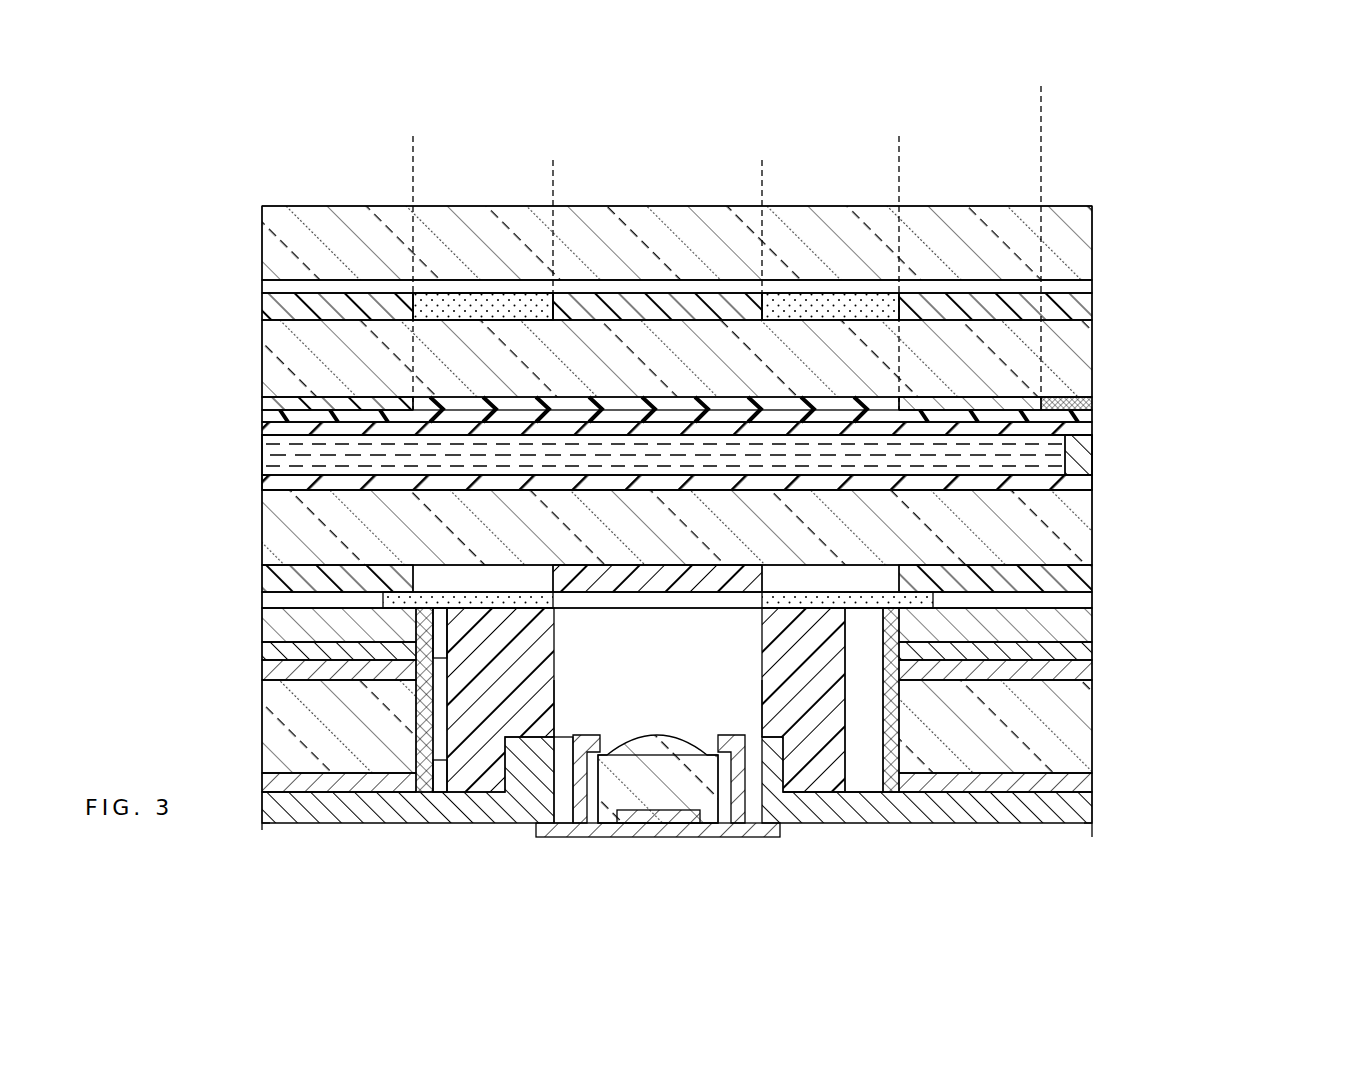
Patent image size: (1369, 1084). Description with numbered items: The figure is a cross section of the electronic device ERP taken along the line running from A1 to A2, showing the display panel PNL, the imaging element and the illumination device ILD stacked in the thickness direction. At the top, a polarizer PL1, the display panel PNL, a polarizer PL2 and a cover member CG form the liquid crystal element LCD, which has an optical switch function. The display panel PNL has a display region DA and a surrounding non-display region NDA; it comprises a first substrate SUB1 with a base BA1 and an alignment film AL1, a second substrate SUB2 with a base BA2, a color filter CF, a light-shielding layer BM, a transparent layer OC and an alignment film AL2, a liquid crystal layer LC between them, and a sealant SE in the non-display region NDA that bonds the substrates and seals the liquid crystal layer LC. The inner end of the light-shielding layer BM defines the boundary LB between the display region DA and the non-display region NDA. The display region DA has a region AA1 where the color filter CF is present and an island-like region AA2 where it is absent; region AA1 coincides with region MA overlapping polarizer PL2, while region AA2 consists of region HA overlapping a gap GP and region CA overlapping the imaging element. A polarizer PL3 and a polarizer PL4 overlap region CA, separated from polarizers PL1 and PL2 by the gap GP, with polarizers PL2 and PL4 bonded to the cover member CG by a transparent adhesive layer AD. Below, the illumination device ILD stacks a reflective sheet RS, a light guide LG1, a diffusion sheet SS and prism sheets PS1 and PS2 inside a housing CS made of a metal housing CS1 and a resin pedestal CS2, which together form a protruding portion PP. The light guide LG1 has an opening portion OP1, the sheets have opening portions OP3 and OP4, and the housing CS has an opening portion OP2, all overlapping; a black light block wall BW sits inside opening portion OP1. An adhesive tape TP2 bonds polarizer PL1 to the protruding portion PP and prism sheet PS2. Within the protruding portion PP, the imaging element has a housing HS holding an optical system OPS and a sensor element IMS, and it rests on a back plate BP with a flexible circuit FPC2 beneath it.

The display region DA is at (257, 118).
The boundary LB is at (1040, 230).
The non-display region NDA is at (1041, 118).
The region AA1 is at (257, 154).
The region AA2 is at (413, 154).
The region MA is at (257, 190).
The region HA is at (413, 190).
The region CA is at (762, 190).
The cover member CG is at (1093, 215).
The electronic device ERP is at (1226, 262).
The transparent adhesive layer AD is at (1093, 287).
The polarizer PL2 is at (320, 300).
The polarizer PL4 is at (640, 300).
The display panel PNL is at (1226, 331).
The gap GP is at (435, 312).
The base BA2 is at (1080, 343).
The color filter CF is at (290, 405).
The light-shielding layer BM is at (1093, 400).
The transparent layer OC is at (1093, 414).
The alignment film AL2 is at (1090, 430).
The second substrate SUB2 is at (1184, 318).
The liquid crystal element LCD is at (246, 463).
The sealant SE is at (1097, 453).
The liquid crystal layer LC is at (1041, 460).
The alignment film AL1 is at (1090, 483).
The base BA1 is at (1080, 537).
The first substrate SUB1 is at (1184, 476).
The polarizer PL1 is at (290, 583).
The polarizer PL3 is at (628, 585).
The opening portion OP3 is at (440, 641).
The adhesive tape TP2 is at (933, 602).
The prism sheet PS2 is at (1080, 630).
The prism sheet PS1 is at (1080, 652).
The diffusion sheet SS is at (1080, 673).
The illumination device ILD is at (1226, 722).
The light guide LG1 is at (1080, 725).
The reflective sheet RS is at (1082, 783).
The housing CS is at (1099, 807).
The light block wall BW is at (893, 790).
The opening portion OP1 is at (435, 705).
The opening portion OP4 is at (440, 783).
The housing CS1 is at (794, 815).
The pedestal CS2 is at (831, 775).
The protruding portion PP is at (569, 705).
The back plate BP is at (339, 812).
The second flexible printed circuit FPC2 is at (590, 828).
The sensor element IMS is at (668, 818).
The optical system OPS is at (640, 800).
The housing HS is at (736, 808).
The opening portion OP2 is at (563, 798).
The line A1-A2 end A1 is at (262, 848).
The line A1-A2 end A2 is at (1094, 849).